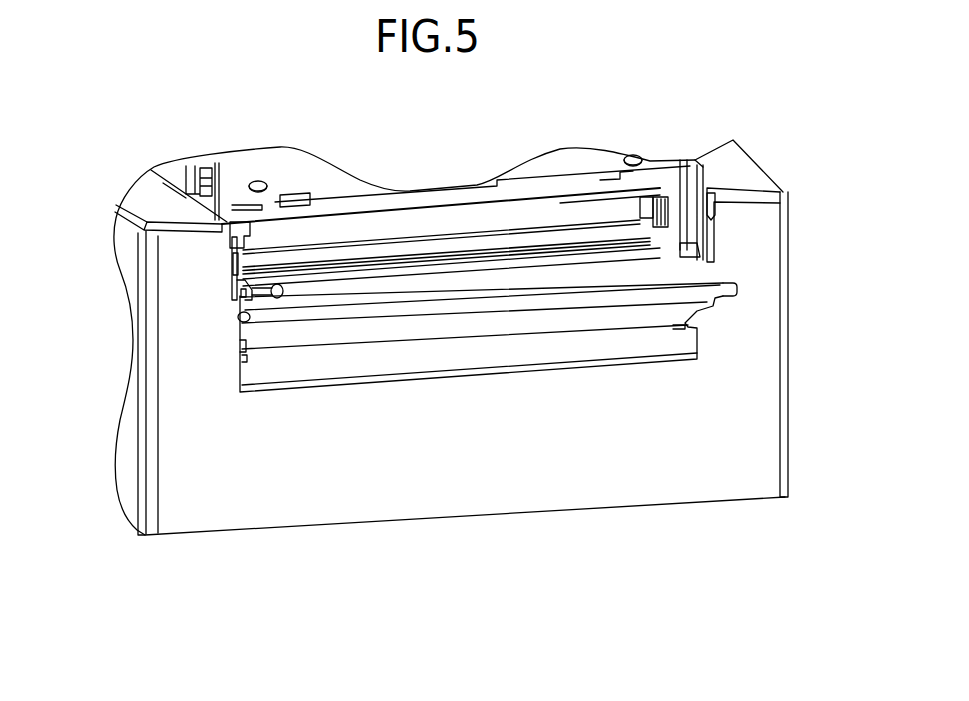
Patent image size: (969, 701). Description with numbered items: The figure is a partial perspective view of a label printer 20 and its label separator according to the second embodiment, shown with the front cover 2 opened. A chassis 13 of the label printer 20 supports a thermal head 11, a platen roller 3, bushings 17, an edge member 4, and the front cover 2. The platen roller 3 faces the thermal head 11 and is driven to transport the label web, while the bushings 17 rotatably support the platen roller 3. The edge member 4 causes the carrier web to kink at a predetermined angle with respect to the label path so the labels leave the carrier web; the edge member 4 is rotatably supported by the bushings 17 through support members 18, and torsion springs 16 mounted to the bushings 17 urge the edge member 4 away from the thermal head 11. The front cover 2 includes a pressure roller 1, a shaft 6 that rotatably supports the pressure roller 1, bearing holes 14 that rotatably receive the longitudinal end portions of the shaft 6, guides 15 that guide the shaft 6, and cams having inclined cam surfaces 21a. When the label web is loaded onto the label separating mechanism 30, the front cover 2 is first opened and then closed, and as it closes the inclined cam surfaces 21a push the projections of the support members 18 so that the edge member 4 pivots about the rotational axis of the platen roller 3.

The pressure roller 1 is at (714, 251).
The front cover 2 is at (690, 320).
The platen roller 3 is at (487, 262).
The edge member 4 is at (427, 247).
The shaft 6 is at (241, 290).
The thermal head 11 is at (445, 212).
The chassis 13 is at (766, 442).
The bearing holes 14 is at (240, 299).
The guides 15 is at (263, 292).
The torsion springs 16 is at (240, 222).
The bushings 17 is at (250, 243).
The support members 18 is at (687, 198).
The label printer 20 is at (792, 136).
The inclined cam surfaces 21a is at (692, 235).
The label separating mechanism 30 is at (224, 326).